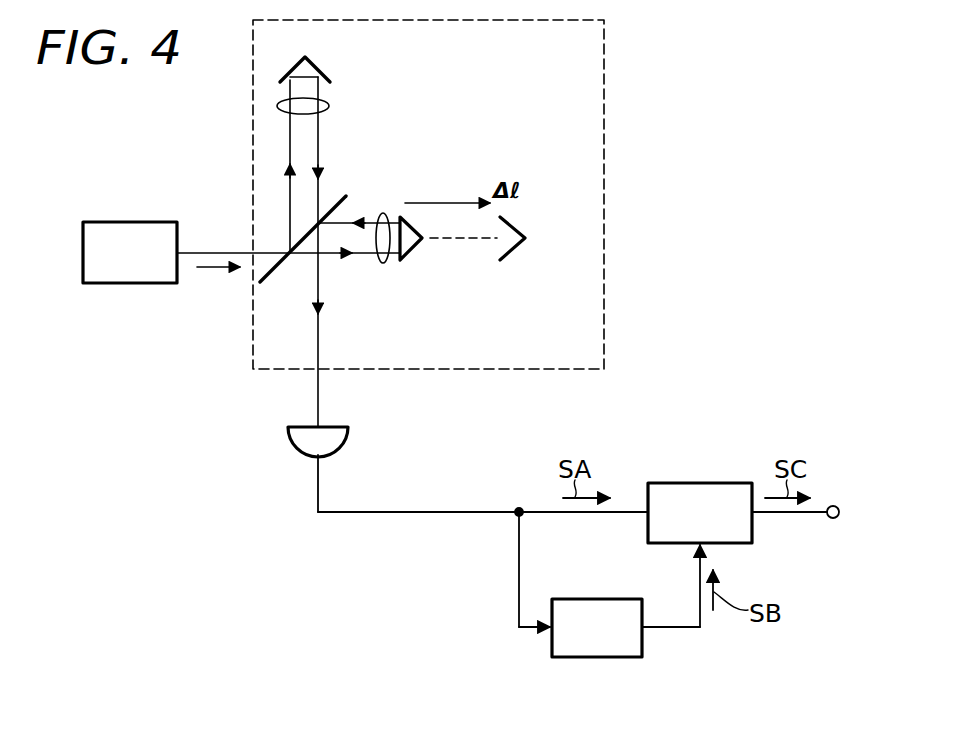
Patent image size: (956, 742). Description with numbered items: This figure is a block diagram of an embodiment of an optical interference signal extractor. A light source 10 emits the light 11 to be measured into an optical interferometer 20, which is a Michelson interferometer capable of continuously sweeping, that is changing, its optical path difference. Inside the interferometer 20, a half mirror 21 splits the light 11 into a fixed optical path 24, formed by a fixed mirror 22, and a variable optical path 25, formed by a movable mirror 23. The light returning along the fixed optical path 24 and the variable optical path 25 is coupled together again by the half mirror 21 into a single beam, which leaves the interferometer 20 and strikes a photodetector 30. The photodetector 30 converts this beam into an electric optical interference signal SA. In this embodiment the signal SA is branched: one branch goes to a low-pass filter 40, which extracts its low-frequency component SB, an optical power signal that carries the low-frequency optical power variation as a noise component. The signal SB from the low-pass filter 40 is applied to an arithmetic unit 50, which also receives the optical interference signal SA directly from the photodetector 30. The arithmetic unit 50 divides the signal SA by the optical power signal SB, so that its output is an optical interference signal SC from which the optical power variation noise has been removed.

The light source 10 is at (160, 222).
The light 11 is at (216, 270).
The optical interferometer 20 is at (606, 64).
The half mirror 21 is at (333, 200).
The fixed mirror 22 is at (312, 63).
The movable mirror 23 is at (410, 258).
The fixed optical path 24 is at (330, 104).
The variable optical path 25 is at (383, 263).
The photodetector 30 is at (348, 432).
The low-pass filter 40 is at (620, 658).
The arithmetic unit 50 is at (720, 483).